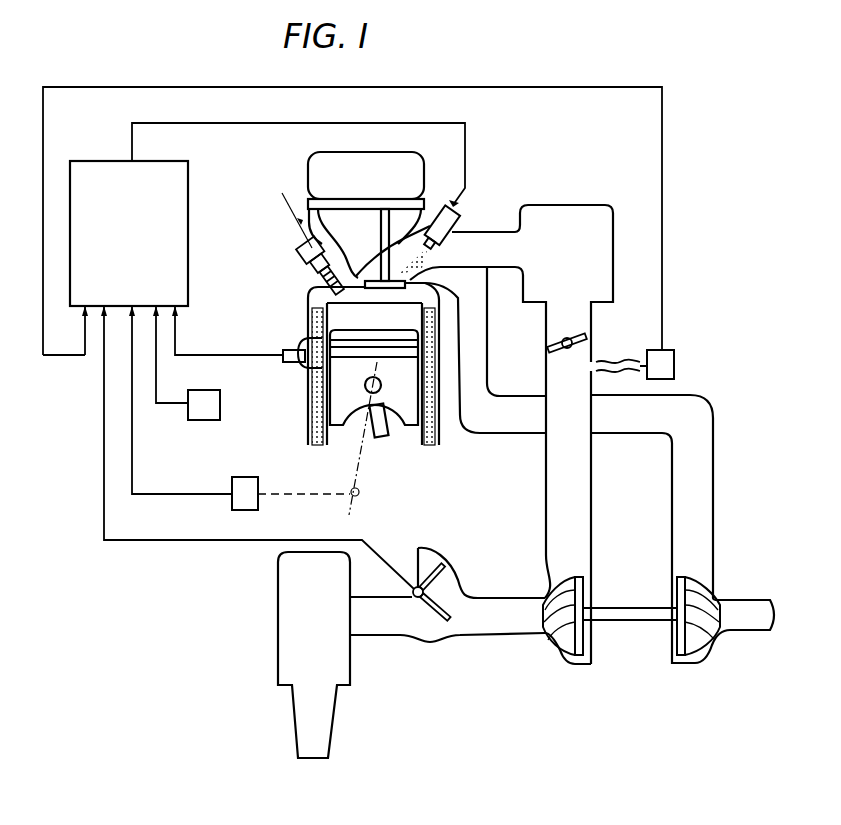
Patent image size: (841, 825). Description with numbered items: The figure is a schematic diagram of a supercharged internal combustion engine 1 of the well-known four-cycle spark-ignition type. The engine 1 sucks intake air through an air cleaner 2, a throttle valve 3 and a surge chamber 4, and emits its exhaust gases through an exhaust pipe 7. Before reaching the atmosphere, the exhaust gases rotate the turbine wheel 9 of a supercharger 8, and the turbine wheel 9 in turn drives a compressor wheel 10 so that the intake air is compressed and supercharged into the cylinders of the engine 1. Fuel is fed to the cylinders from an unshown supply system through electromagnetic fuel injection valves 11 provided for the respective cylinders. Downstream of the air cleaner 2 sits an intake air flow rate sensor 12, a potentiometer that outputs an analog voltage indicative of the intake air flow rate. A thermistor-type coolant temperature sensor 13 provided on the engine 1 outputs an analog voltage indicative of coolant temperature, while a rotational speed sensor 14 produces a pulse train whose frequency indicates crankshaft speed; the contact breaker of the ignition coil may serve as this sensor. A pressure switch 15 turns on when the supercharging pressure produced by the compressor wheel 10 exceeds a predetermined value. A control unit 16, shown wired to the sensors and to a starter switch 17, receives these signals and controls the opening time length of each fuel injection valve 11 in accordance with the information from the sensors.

The internal combustion engine 1 is at (369, 152).
The air cleaner 2 is at (278, 643).
The throttle valve 3 is at (588, 338).
The surge chamber 4 is at (571, 212).
The exhaust pipe 7 is at (705, 422).
The supercharger 8 is at (640, 628).
The turbine wheel 9 is at (688, 650).
The compressor wheel 10 is at (577, 650).
The electromagnetic fuel injection valve 11 is at (455, 214).
The intake air flow rate sensor 12 is at (428, 562).
The coolant temperature sensor 13 is at (305, 372).
The rotational speed sensor 14 is at (244, 477).
The pressure switch 15 is at (674, 362).
The control unit 16 is at (99, 160).
The starter switch 17 is at (203, 413).